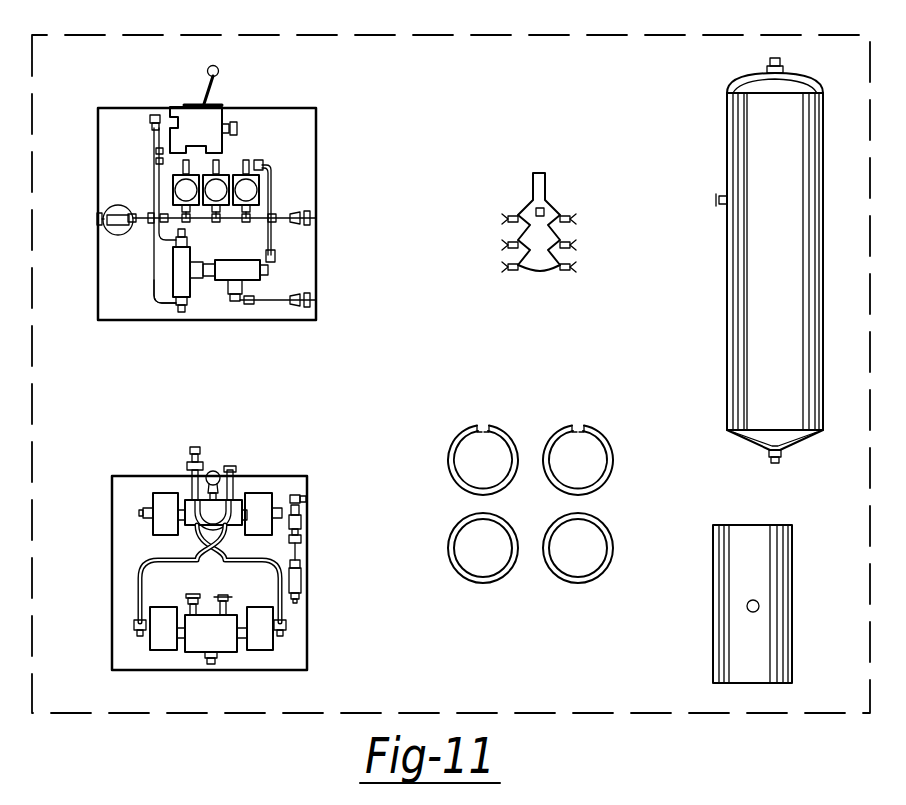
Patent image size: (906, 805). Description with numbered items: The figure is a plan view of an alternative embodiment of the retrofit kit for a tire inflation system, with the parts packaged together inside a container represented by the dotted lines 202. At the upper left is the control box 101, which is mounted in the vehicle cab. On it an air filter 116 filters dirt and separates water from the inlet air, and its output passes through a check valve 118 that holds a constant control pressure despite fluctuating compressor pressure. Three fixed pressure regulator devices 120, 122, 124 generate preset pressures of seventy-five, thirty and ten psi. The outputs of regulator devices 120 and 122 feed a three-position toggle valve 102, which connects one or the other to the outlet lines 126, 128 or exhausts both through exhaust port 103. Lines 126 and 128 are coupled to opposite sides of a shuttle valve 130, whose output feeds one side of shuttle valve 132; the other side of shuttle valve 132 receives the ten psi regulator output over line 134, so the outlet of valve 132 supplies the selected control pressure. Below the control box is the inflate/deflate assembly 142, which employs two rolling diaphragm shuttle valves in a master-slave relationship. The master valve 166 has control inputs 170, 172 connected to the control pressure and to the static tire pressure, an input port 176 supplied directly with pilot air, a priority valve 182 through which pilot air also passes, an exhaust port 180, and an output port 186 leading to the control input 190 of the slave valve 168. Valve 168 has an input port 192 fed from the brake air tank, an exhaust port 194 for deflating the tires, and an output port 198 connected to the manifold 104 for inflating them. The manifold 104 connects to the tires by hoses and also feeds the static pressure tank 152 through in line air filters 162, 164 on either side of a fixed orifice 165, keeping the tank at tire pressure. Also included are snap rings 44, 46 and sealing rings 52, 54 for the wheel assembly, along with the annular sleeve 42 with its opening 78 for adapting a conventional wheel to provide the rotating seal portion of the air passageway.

The container 202 is at (757, 33).
The control box 101 is at (313, 131).
The toggle valve 102 is at (212, 116).
The exhaust port 103 is at (237, 128).
The manifold 104 is at (548, 198).
The air filter 116 is at (111, 236).
The check valve 118 is at (148, 213).
The pressure regulator device 120 is at (157, 178).
The pressure regulator device 122 is at (174, 190).
The pressure regulator device 124 is at (272, 187).
The outlet line 126 is at (163, 243).
The outlet line 128 is at (153, 283).
The shuttle valve 130 is at (190, 285).
The shuttle valve 132 is at (243, 285).
The line 134 is at (270, 187).
The inflate/deflate assembly 142 is at (320, 652).
The static pressure tank 152 is at (735, 114).
The in line air filter 162 is at (302, 587).
The in line air filter 164 is at (300, 523).
The fixed orifice 165 is at (298, 553).
The master valve 166 is at (262, 468).
The slave valve 168 is at (265, 604).
The control input 170 is at (165, 496).
The control input 172 is at (292, 497).
The input port 176 is at (262, 503).
The exhaust port 180 is at (214, 471).
The priority valve 182 is at (195, 446).
The output port 186 is at (240, 537).
The control input 190 is at (157, 638).
The input port 192 is at (218, 578).
The exhaust port 194 is at (188, 600).
The output port 198 is at (212, 639).
The annular sleeve 42 is at (723, 560).
The snap ring 44 is at (500, 435).
The snap ring 46 is at (605, 438).
The sealing ring 52 is at (450, 537).
The sealing ring 54 is at (605, 523).
The opening 78 is at (746, 606).